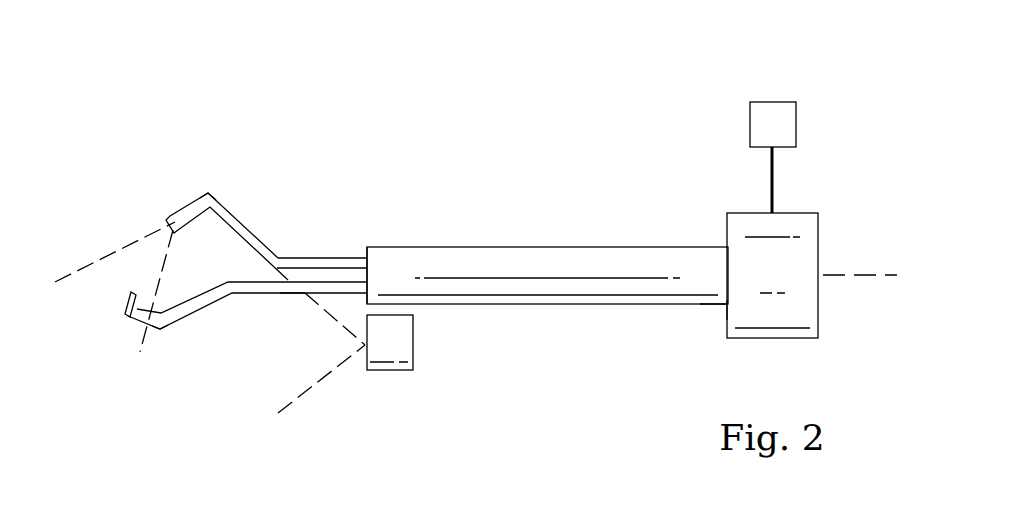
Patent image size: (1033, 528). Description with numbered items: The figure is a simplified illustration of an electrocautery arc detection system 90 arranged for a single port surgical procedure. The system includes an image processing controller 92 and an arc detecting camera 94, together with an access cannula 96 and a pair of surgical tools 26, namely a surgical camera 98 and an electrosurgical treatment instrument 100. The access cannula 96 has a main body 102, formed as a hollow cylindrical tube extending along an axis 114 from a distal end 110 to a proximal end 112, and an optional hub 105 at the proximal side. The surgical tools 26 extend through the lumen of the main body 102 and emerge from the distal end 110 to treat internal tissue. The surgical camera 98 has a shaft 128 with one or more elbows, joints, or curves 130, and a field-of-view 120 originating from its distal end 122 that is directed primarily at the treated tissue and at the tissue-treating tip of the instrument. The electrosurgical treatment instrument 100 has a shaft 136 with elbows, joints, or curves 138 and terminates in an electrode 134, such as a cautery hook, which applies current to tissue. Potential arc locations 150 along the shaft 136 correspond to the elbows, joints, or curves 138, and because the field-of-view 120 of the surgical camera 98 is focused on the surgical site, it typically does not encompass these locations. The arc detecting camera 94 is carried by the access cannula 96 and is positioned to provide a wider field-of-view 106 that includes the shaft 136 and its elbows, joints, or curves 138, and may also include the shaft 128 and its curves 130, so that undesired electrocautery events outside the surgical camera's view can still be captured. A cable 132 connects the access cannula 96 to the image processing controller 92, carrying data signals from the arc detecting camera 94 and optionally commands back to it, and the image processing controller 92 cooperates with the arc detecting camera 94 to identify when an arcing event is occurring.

The surgical tools 26 is at (128, 113).
The electrocautery arc detection system 90 is at (728, 66).
The image processing controller 92 is at (796, 122).
The arc detecting camera 94 is at (413, 352).
The access cannula 96 is at (637, 232).
The surgical camera 98 is at (262, 205).
The electrosurgical treatment instrument 100 is at (224, 322).
The main body 102 is at (547, 248).
The hub 105 is at (772, 342).
The field-of-view 106 is at (322, 377).
The distal end 110 is at (380, 220).
The proximal end 112 is at (705, 328).
The axis 114 is at (860, 267).
The field-of-view 120 is at (113, 250).
The distal end 122 is at (176, 217).
The shaft 128 is at (322, 265).
The elbows, joints, or curves 130 is at (208, 193).
The cable 132 is at (775, 180).
The electrode 134 is at (127, 307).
The shaft 136 is at (292, 293).
The elbows, joints, or curves 138 is at (230, 280).
The potential arc locations 150 is at (182, 350).